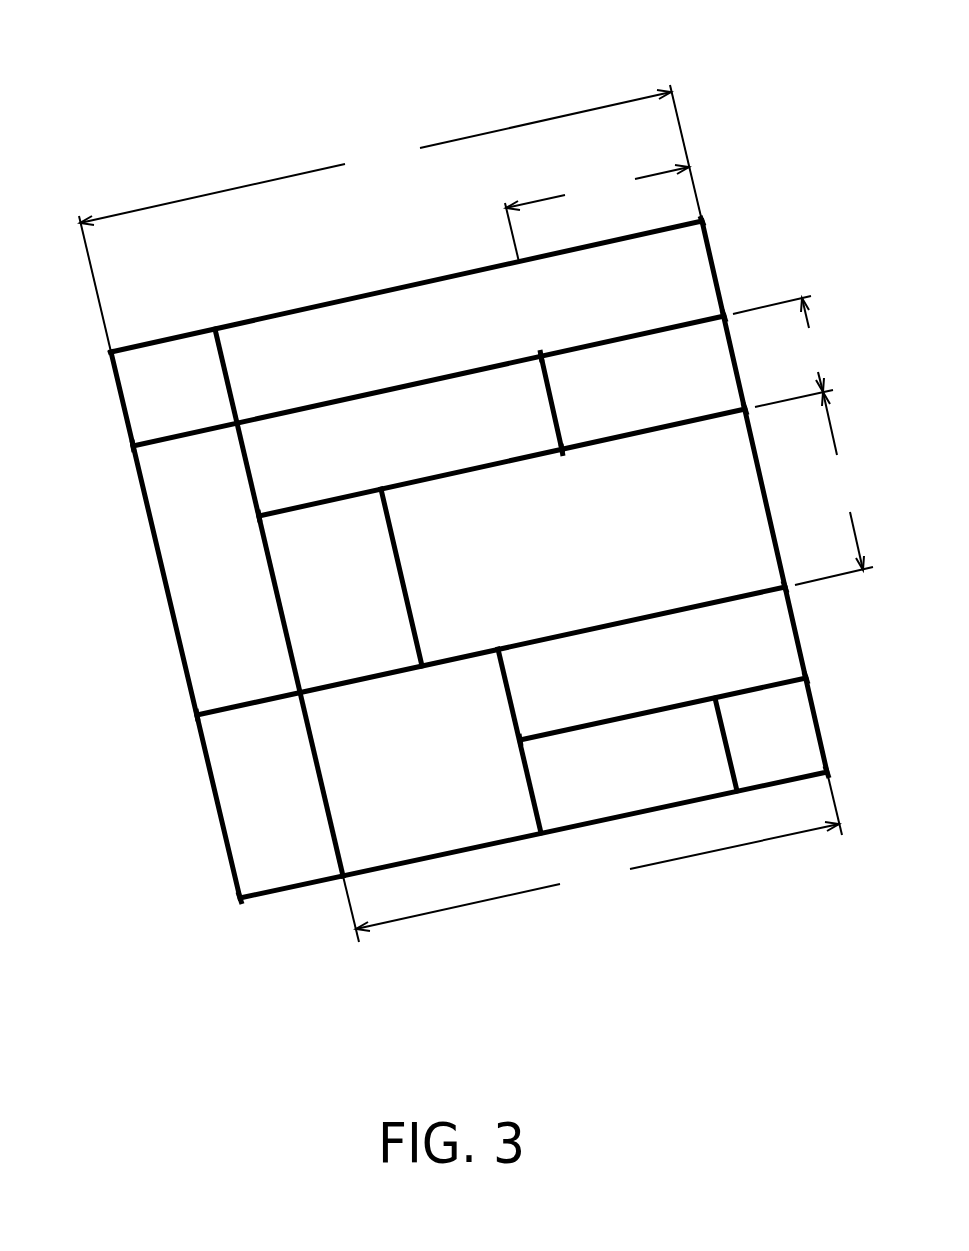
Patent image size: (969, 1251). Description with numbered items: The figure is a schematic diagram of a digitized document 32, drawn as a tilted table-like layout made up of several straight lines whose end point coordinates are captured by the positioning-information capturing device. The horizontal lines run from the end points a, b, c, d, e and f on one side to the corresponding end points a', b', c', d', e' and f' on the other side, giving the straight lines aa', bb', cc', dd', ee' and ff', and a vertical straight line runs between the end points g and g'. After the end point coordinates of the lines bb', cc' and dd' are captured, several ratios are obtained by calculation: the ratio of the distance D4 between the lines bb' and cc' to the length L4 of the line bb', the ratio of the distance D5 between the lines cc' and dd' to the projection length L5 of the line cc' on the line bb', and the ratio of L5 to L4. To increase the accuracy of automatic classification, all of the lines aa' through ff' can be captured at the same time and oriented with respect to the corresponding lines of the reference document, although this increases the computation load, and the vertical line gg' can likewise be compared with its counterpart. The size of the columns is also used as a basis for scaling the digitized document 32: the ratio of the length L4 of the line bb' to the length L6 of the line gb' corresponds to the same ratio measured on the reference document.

The digitized document 32 is at (58, 53).
The length of the straight line bb' L4 is at (390, 218).
The projection length of the straight line cc' on the straight line bb' L5 is at (592, 857).
The length of the straight line gb' L6 is at (597, 213).
The distance between the straight lines bb' and cc' D4 is at (785, 351).
The distance between the straight lines cc' and dd' D5 is at (834, 488).
The end point of the straight line aa' a is at (96, 359).
The end point of the straight line bb' b is at (116, 451).
The end point of the straight line cc' c is at (244, 519).
The end point of the straight line dd' d is at (181, 720).
The end point of the straight line ee' e is at (504, 746).
The end point of the straight line ff' f is at (226, 906).
The end point of the vertical straight line gg' g is at (533, 337).
The end point of the straight line aa' a' is at (721, 220).
The end point of the straight line bb' b' is at (740, 299).
The end point of the straight line cc' c' is at (764, 418).
The end point of the straight line dd' d' is at (802, 569).
The end point of the straight line ee' e' is at (824, 678).
The end point of the straight line ff' f' is at (843, 770).
The end point of the vertical straight line gg' g' is at (572, 465).